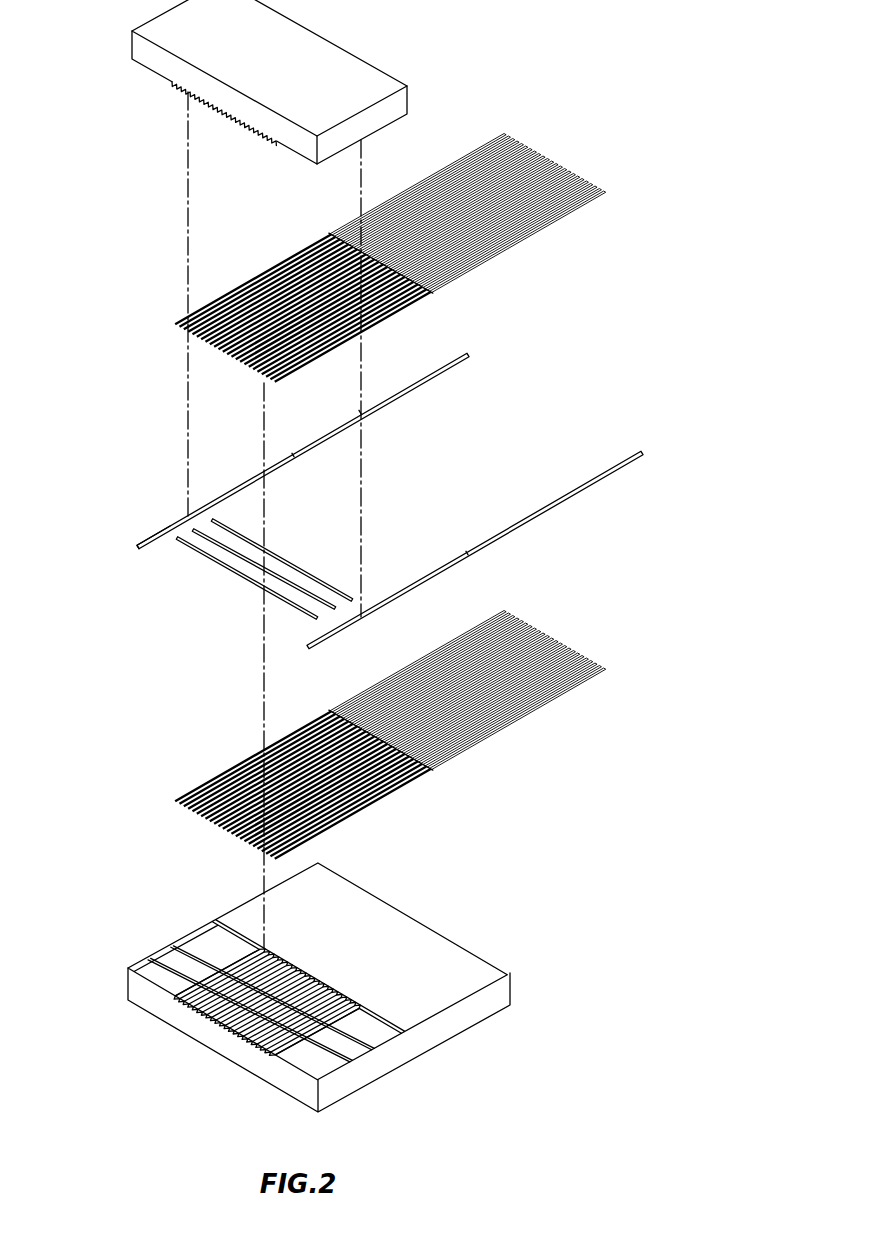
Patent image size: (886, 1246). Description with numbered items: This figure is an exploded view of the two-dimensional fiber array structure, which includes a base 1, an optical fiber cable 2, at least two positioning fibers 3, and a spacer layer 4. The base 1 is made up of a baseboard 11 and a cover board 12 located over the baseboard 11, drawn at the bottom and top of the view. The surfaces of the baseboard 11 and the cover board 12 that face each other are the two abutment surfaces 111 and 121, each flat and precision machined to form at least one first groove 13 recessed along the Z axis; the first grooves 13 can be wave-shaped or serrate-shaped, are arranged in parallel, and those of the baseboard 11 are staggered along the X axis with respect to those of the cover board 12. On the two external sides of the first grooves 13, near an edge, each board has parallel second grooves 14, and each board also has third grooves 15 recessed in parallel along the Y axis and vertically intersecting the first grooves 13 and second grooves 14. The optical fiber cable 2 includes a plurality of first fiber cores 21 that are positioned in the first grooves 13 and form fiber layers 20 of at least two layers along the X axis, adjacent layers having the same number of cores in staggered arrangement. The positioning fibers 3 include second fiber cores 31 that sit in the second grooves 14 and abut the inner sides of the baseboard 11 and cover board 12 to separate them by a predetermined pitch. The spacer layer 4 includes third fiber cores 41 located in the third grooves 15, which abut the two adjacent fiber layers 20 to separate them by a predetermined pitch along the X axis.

The base 1 is at (282, 987).
The baseboard 11 is at (155, 1003).
The abutment surface 111 is at (153, 973).
The cover board 12 is at (236, 68).
The abutment surface 121 is at (147, 70).
The first groove 13 is at (250, 125).
The second grooves 14 is at (310, 163).
The third grooves 15 is at (368, 133).
The optical fiber cable 2 is at (315, 508).
The fiber layers 20 is at (200, 824).
The first fiber cores 21 is at (183, 317).
The positioning fibers 3 is at (358, 500).
The second fiber cores 31 is at (148, 540).
The spacer layer 4 is at (250, 588).
The third fiber cores 41 is at (183, 543).